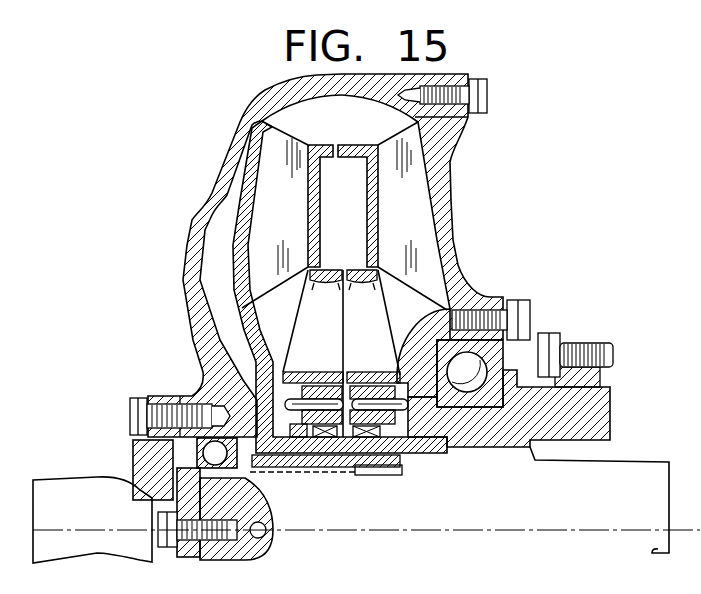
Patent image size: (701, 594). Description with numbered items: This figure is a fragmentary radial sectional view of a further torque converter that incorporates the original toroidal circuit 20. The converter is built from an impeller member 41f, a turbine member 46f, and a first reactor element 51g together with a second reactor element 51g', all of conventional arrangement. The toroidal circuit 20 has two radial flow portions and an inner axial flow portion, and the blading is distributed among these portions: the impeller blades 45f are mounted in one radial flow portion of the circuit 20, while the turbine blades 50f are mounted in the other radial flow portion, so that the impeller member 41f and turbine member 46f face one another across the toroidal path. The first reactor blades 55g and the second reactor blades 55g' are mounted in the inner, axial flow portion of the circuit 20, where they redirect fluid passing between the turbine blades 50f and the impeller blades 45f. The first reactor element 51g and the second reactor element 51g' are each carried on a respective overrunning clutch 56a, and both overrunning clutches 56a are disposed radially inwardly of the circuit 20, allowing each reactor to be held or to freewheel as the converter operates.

The toroidal circuit 20 is at (354, 132).
The turbine blades 50f is at (299, 226).
The impeller blades 45f is at (424, 226).
The impeller member 41f is at (454, 194).
The turbine member 46f is at (214, 279).
The first reactor element 51g is at (275, 304).
The second reactor element 51g' is at (412, 297).
The first reactor blades 55g is at (313, 353).
The second reactor blades 55g' is at (374, 326).
The overrunning clutches 56a is at (361, 440).